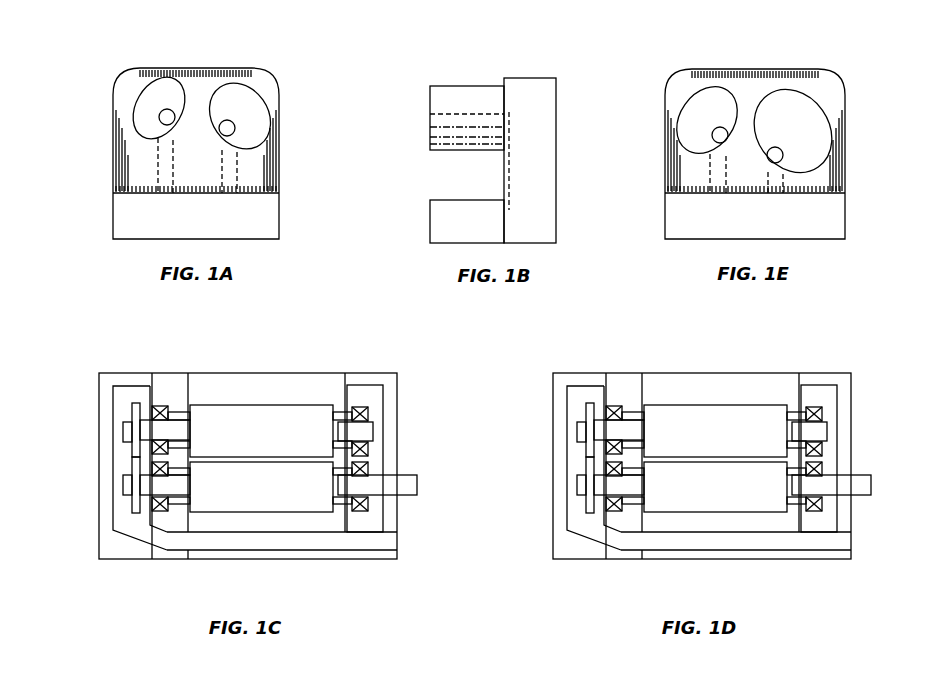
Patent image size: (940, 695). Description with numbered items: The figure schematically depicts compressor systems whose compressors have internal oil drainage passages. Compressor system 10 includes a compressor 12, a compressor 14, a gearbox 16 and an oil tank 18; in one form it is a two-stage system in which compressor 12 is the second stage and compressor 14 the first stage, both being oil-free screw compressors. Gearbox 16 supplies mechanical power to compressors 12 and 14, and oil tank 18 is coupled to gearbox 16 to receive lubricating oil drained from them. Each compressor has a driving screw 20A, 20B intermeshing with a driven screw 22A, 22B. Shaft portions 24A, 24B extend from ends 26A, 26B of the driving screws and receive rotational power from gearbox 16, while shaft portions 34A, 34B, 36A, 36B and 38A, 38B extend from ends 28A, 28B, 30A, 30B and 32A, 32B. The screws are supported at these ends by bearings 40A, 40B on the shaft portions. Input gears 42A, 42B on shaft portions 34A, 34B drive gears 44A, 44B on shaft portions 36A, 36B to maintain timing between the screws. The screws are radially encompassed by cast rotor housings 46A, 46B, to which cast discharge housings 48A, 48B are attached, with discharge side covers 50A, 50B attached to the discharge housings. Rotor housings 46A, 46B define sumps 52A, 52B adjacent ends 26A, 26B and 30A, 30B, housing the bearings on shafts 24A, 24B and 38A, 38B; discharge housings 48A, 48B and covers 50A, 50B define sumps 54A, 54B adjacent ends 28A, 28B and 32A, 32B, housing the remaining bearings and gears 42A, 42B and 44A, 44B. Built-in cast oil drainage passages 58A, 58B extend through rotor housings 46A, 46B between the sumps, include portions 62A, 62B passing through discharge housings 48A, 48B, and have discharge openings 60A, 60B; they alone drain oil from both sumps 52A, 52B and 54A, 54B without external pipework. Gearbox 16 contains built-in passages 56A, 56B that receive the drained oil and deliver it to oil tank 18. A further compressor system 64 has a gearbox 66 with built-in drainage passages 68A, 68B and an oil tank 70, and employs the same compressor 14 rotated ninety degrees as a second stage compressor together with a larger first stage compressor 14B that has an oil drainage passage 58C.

In FIG. 1A, the compressor system 10 is at (106, 46).
In FIG. 1B, the compressor system 10 is at (426, 46).
In FIG. 1A, the compressor 12 is at (151, 79).
In FIG. 1B, the compressor 12 is at (431, 139).
In FIG. 1C, the compressor 12 is at (105, 580).
In FIG. 1A, the compressor 14 is at (250, 82).
In FIG. 1B, the compressor 14 is at (430, 167).
In FIG. 1E, the compressor 14 is at (702, 87).
In FIG. 1D, the compressor 14 is at (702, 469).
In FIG. 1E, the first stage compressor 14B is at (800, 91).
In FIG. 1A, the gearbox 16 is at (196, 68).
In FIG. 1B, the gearbox 16 is at (556, 127).
In FIG. 1A, the oil tank 18 is at (188, 222).
In FIG. 1B, the oil tank 18 is at (455, 233).
In FIG. 1C, the driving screw 20A is at (250, 496).
In FIG. 1D, the driving screw 20B is at (715, 487).
In FIG. 1C, the driven screw 22A is at (250, 439).
In FIG. 1D, the driven screw 22B is at (715, 431).
In FIG. 1C, the shaft portion 24A is at (366, 494).
In FIG. 1D, the shaft portion 24B is at (831, 485).
In FIG. 1C, the end 26A is at (368, 503).
In FIG. 1D, the end 26B is at (851, 512).
In FIG. 1C, the end 28A is at (187, 503).
In FIG. 1D, the end 28B is at (575, 526).
In FIG. 1C, the end 30A is at (368, 405).
In FIG. 1D, the end 30B is at (841, 395).
In FIG. 1C, the end 32A is at (186, 404).
In FIG. 1D, the end 32B is at (636, 451).
In FIG. 1C, the shaft portion 34A is at (153, 494).
In FIG. 1D, the shaft portion 34B is at (619, 485).
In FIG. 1C, the shaft portion 36A is at (153, 439).
In FIG. 1D, the shaft portion 36B is at (619, 430).
In FIG. 1C, the shaft portion 38A is at (343, 440).
In FIG. 1D, the shaft portion 38B is at (809, 431).
In FIG. 1C, the bearings 40A is at (158, 406).
In FIG. 1D, the bearings 40B is at (703, 420).
In FIG. 1C, the input gear 42A is at (130, 503).
In FIG. 1D, the input gear 42B is at (552, 485).
In FIG. 1C, the gear 44A is at (130, 410).
In FIG. 1D, the gear 44B is at (552, 420).
In FIG. 1C, the cast rotor housing 46A is at (250, 397).
In FIG. 1D, the cast rotor housing 46B is at (750, 452).
In FIG. 1C, the cast discharge housing 48A is at (183, 561).
In FIG. 1D, the cast discharge housing 48B is at (657, 573).
In FIG. 1C, the discharge side cover 50A is at (99, 518).
In FIG. 1D, the discharge side cover 50B is at (563, 468).
In FIG. 1C, the sump 52A is at (355, 392).
In FIG. 1D, the sump 52B is at (810, 438).
In FIG. 1C, the sump 54A is at (122, 386).
In FIG. 1D, the sump 54B is at (583, 434).
In FIG. 1A, the built-in passage 56A is at (158, 152).
In FIG. 1A, the built-in passage 56B is at (237, 167).
In FIG. 1A, the built-in cast oil drainage passage 58A is at (160, 116).
In FIG. 1B, the built-in cast oil drainage passage 58A is at (452, 112).
In FIG. 1C, the built-in cast oil drainage passage 58A is at (283, 543).
In FIG. 1A, the built-in cast oil drainage passage 58B is at (235, 129).
In FIG. 1B, the built-in cast oil drainage passage 58B is at (478, 146).
In FIG. 1E, the built-in cast oil drainage passage 58B is at (712, 134).
In FIG. 1D, the built-in cast oil drainage passage 58B is at (736, 563).
In FIG. 1E, the oil drainage passage 58C is at (783, 155).
In FIG. 1A, the discharge opening 60A is at (156, 104).
In FIG. 1C, the discharge opening 60A is at (395, 540).
In FIG. 1A, the discharge opening 60B is at (240, 115).
In FIG. 1E, the discharge opening 60B is at (707, 105).
In FIG. 1D, the discharge opening 60B is at (875, 551).
In FIG. 1C, the portion 62A is at (167, 537).
In FIG. 1D, the portion 62B is at (602, 573).
In FIG. 1E, the compressor system 64 is at (860, 49).
In FIG. 1E, the gearbox 66 is at (746, 69).
In FIG. 1E, the built-in drainage passage 68A is at (710, 158).
In FIG. 1E, the built-in drainage passage 68B is at (788, 182).
In FIG. 1E, the oil tank 70 is at (746, 222).